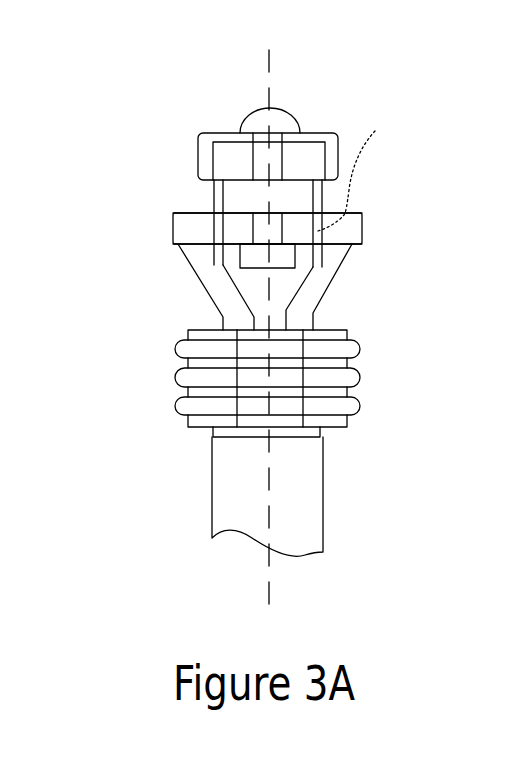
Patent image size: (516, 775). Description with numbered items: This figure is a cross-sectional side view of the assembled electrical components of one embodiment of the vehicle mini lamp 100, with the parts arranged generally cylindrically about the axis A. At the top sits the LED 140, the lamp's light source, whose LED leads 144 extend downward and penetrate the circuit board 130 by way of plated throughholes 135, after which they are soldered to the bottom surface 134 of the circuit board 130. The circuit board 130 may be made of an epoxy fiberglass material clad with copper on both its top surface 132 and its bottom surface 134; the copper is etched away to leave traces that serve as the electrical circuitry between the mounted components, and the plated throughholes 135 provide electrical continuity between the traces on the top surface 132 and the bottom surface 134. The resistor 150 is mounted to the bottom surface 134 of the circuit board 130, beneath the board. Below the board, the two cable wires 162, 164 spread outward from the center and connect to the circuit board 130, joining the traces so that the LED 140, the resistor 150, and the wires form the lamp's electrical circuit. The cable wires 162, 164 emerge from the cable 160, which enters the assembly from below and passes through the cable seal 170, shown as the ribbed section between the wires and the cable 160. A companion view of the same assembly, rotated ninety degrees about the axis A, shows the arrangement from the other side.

The vehicle mini lamp 100 is at (389, 86).
The axis A is at (270, 58).
The LED 140 is at (203, 133).
The LED leads 144 is at (212, 198).
The circuit board 130 is at (183, 228).
The top surface 132 is at (349, 213).
The bottom surface 134 is at (340, 246).
The throughholes 135 is at (369, 165).
The resistor 150 is at (192, 275).
The cable wire 162 is at (223, 292).
The cable wire 164 is at (322, 285).
The cable seal 170 is at (176, 349).
The cable 160 is at (305, 510).